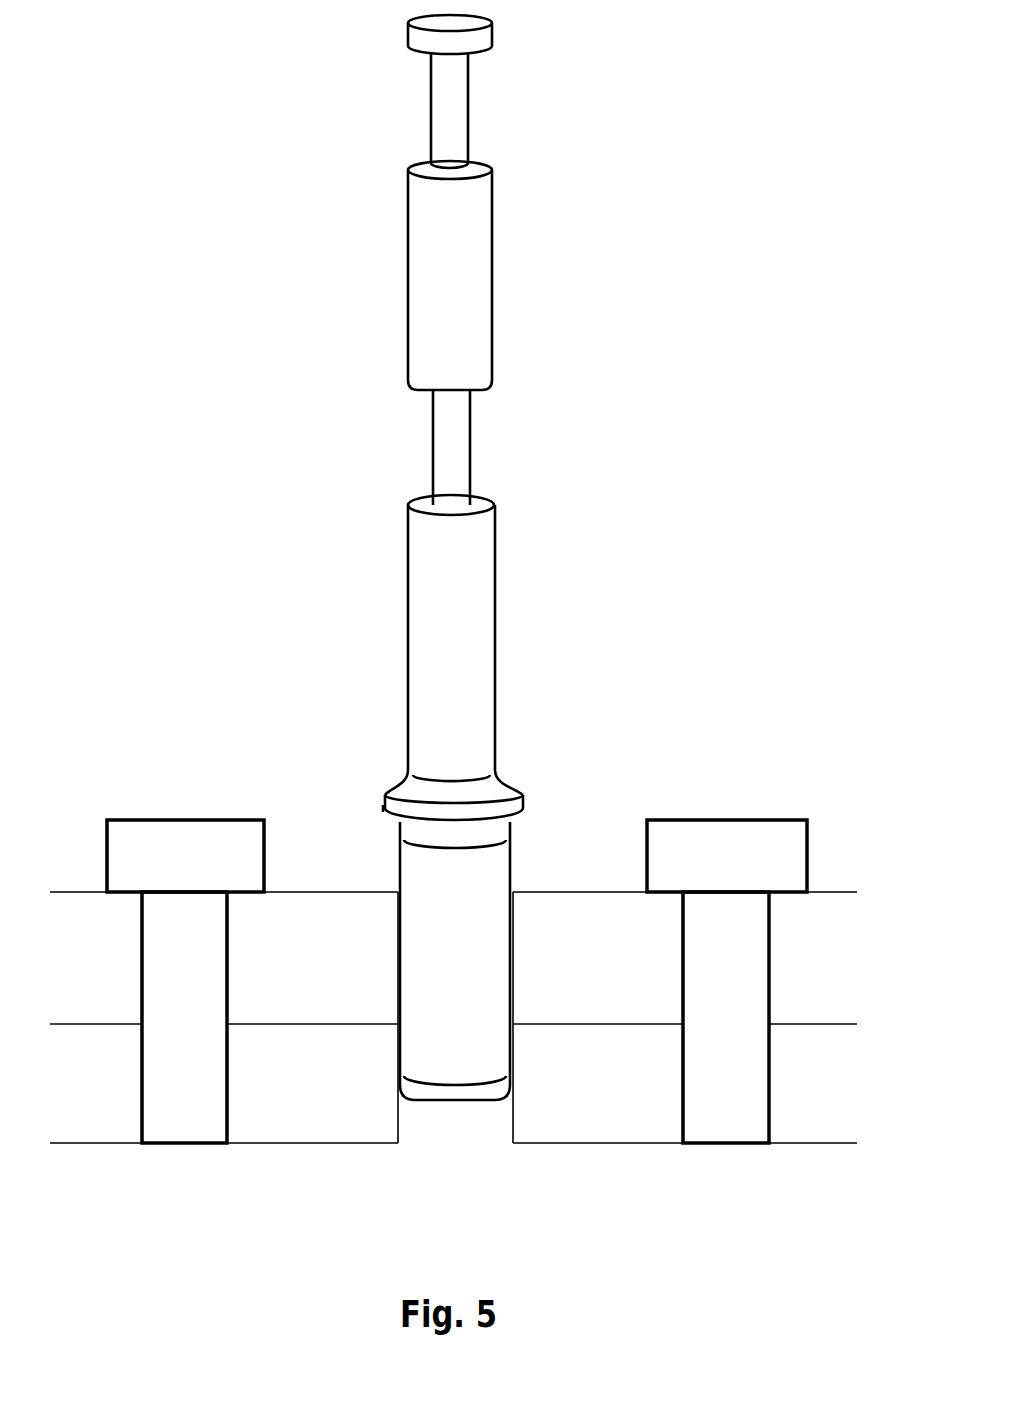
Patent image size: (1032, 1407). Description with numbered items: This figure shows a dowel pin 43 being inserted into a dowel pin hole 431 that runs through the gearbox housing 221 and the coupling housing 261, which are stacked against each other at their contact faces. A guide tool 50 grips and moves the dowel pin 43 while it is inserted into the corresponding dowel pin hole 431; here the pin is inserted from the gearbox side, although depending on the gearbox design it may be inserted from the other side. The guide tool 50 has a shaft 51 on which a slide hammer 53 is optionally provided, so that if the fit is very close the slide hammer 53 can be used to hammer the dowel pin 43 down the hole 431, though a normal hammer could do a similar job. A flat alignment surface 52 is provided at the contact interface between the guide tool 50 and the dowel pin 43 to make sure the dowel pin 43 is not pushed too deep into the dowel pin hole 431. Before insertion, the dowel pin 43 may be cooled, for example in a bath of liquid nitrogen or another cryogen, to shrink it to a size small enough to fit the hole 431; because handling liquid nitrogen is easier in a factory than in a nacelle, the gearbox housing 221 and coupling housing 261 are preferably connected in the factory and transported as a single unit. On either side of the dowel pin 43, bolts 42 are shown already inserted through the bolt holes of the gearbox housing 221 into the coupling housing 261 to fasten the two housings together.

The guide tool 50 is at (583, 127).
The shaft 51 is at (427, 125).
The slide hammer 53 is at (408, 268).
The flat alignment surface 52 is at (388, 822).
The dowel pin 43 is at (478, 988).
The dowel pin hole 431 is at (450, 1143).
The bolts 42 is at (185, 1110).
The gearbox housing 221 is at (827, 892).
The coupling housing 261 is at (830, 1143).